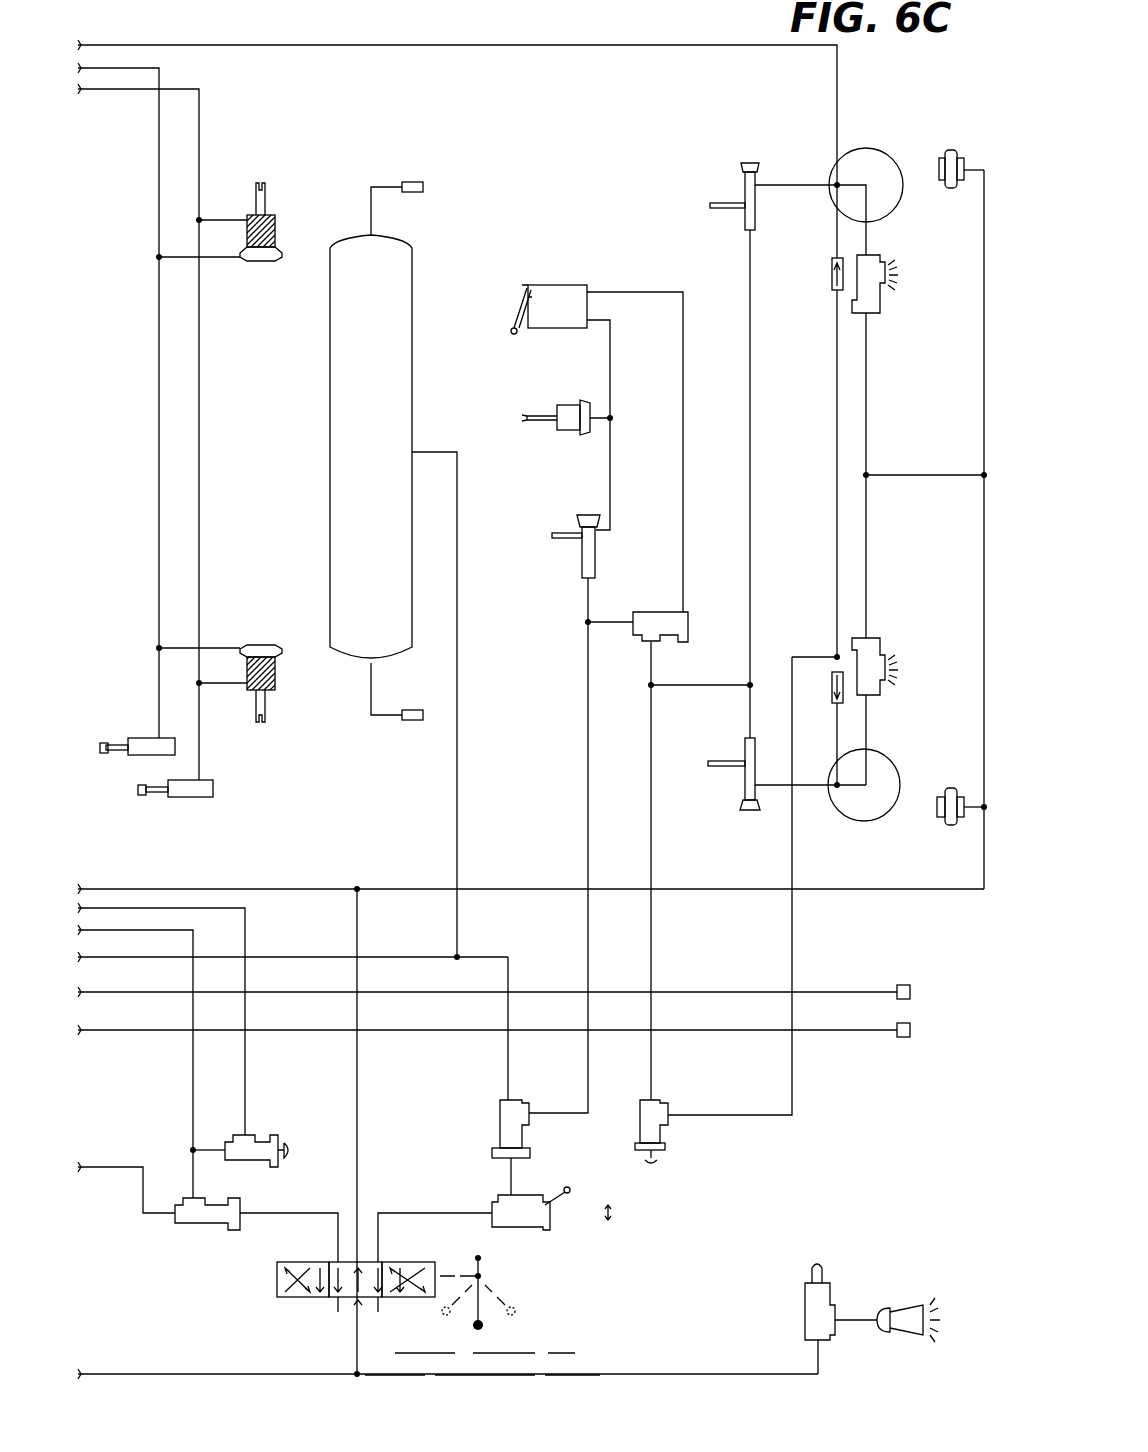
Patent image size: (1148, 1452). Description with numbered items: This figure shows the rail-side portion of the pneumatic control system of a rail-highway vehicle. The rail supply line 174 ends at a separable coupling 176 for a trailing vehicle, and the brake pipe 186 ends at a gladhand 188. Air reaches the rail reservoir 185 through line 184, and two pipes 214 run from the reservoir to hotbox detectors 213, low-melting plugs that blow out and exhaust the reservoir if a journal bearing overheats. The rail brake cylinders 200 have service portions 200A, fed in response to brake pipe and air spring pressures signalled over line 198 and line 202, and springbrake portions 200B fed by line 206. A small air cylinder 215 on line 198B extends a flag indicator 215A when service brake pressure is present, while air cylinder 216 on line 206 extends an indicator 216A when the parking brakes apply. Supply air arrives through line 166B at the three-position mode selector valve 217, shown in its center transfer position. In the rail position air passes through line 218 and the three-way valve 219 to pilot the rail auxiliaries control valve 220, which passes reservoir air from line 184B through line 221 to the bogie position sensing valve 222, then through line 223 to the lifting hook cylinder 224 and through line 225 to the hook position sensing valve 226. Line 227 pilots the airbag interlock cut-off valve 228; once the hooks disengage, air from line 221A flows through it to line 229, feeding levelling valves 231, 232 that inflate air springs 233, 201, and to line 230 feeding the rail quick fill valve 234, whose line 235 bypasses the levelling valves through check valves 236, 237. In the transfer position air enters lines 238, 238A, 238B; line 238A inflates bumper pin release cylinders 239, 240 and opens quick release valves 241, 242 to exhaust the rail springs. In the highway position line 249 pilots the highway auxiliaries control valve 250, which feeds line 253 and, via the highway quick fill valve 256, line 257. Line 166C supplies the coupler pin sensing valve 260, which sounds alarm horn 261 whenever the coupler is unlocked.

The supply line 166B is at (135, 1374).
The supply line 166C is at (700, 1374).
The rail supply line 174 is at (838, 1030).
The separable coupling 176 is at (903, 1040).
The line 184 is at (457, 452).
The line 184B is at (490, 957).
The rail reservoir 185 is at (330, 383).
The brake pipe 186 is at (838, 992).
The separable coupling or gladhand 188 is at (903, 985).
The line 198 is at (159, 190).
The line 198B is at (159, 690).
The rail brake cylinder 200 is at (256, 190).
The service portion 200A is at (270, 262).
The springbrake portion 200B is at (275, 232).
The rail air spring 201 is at (895, 130).
The line 202 is at (577, 45).
The line 206 is at (199, 130).
The hotbox detector 213 is at (420, 187).
The pipe 214 is at (371, 217).
The air cylinder 215 is at (138, 757).
The indicator 215A is at (108, 743).
The air cylinder 216 is at (180, 798).
The indicator 216A is at (146, 798).
The mode selector valve 217 is at (277, 1282).
The line 218 is at (378, 1245).
The three-way manually-operated valve 219 is at (530, 1228).
The rail mode auxiliaries control pilot-operated valve 220 is at (500, 1128).
The line 221 is at (588, 660).
The line 221A is at (610, 620).
The rail bogie position sensing valve 222 is at (582, 557).
The line 223 is at (610, 467).
The lifting hook cylinder 224 is at (557, 428).
The line 225 is at (610, 358).
The hook position sensing valve 226 is at (555, 285).
The line 227 is at (683, 292).
The rail airbag interlock cut-off valve 228 is at (690, 617).
The line 229 is at (655, 680).
The line 230 is at (651, 738).
The rail levelling valve 231 is at (745, 805).
The rail levelling valve 232 is at (752, 163).
The rail suspension air spring 233 is at (888, 762).
The rail quick fill valve 234 is at (665, 1145).
The line 235 is at (792, 905).
The quick fill check valve 236 is at (812, 670).
The quick fill check valve 237 is at (832, 278).
The line 238 is at (357, 925).
The line 238A is at (984, 235).
The line 238B is at (320, 889).
The bumper pin release cylinder 239 is at (952, 825).
The bumper pin release cylinder 240 is at (966, 130).
The rail air spring quick release valve 241 is at (882, 648).
The rail air spring quick release valve 242 is at (878, 300).
The line 249 is at (338, 1242).
The highway auxiliaries control pilot-operated valve 250 is at (190, 1225).
The line 253 is at (158, 930).
The highway quick fill valve 256 is at (270, 1135).
The line 257 is at (245, 925).
The coupler pin sensing valve 260 is at (805, 1288).
The alarm horn 261 is at (895, 1280).